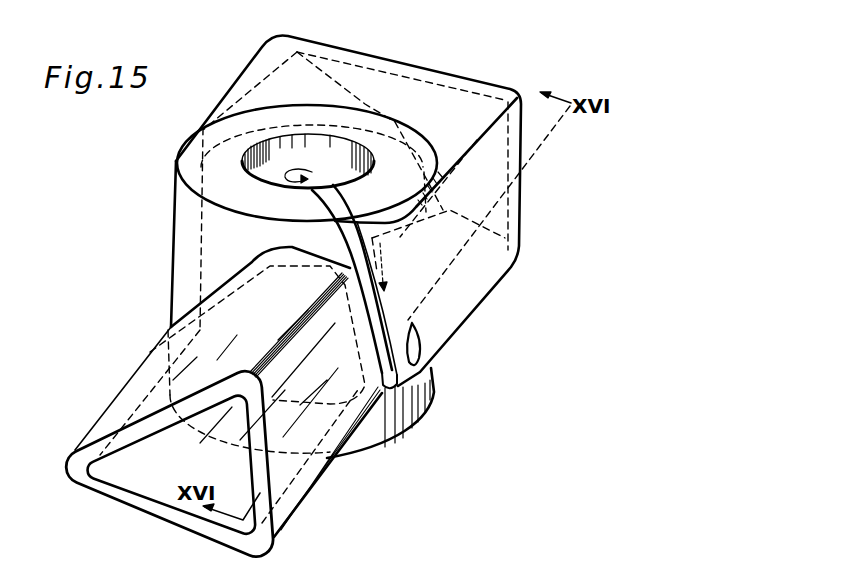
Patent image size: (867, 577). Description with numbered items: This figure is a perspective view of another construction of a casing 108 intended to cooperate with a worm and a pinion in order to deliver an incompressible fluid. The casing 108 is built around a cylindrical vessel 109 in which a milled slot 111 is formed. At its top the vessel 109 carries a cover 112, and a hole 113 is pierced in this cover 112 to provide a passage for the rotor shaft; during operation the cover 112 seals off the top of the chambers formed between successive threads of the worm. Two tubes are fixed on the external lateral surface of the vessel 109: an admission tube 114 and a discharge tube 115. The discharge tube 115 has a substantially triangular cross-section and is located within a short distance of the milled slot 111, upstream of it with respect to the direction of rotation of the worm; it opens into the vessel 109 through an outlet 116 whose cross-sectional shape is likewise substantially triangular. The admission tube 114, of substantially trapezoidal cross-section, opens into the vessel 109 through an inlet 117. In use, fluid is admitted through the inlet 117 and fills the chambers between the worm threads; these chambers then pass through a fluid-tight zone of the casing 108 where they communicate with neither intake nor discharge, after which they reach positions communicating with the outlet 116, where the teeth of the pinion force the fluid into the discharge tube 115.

The casing 108 is at (145, 210).
The cylindrical vessel 109 is at (178, 262).
The milled slot 111 is at (386, 393).
The cover 112 is at (303, 116).
The hole 113 is at (338, 178).
The admission tube 114 is at (436, 101).
The discharge tube 115 is at (285, 474).
The outlet 116 is at (255, 287).
The inlet 117 is at (420, 345).